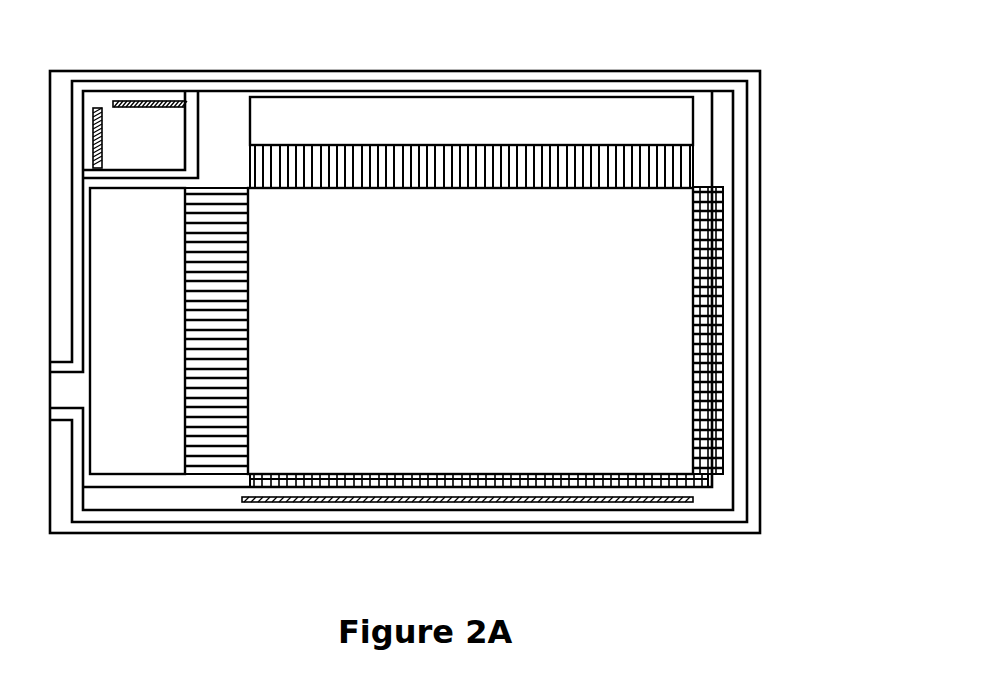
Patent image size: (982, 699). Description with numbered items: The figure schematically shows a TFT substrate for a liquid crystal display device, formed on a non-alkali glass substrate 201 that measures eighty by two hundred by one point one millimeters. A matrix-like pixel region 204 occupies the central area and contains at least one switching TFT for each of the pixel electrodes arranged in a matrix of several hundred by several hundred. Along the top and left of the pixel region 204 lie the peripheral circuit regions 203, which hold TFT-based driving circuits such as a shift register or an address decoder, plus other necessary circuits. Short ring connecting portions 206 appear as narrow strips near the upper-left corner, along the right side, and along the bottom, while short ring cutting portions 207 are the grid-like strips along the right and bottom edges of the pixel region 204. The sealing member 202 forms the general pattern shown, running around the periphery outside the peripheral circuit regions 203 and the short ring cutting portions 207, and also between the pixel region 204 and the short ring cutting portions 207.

The non-alkali glass substrate 201 is at (232, 113).
The sealing member 202 is at (522, 80).
The peripheral circuit regions 203 is at (500, 136).
The pixel region 204 is at (500, 338).
The short ring connecting portions 206 is at (100, 114).
The short ring cutting portions 207 is at (702, 186).